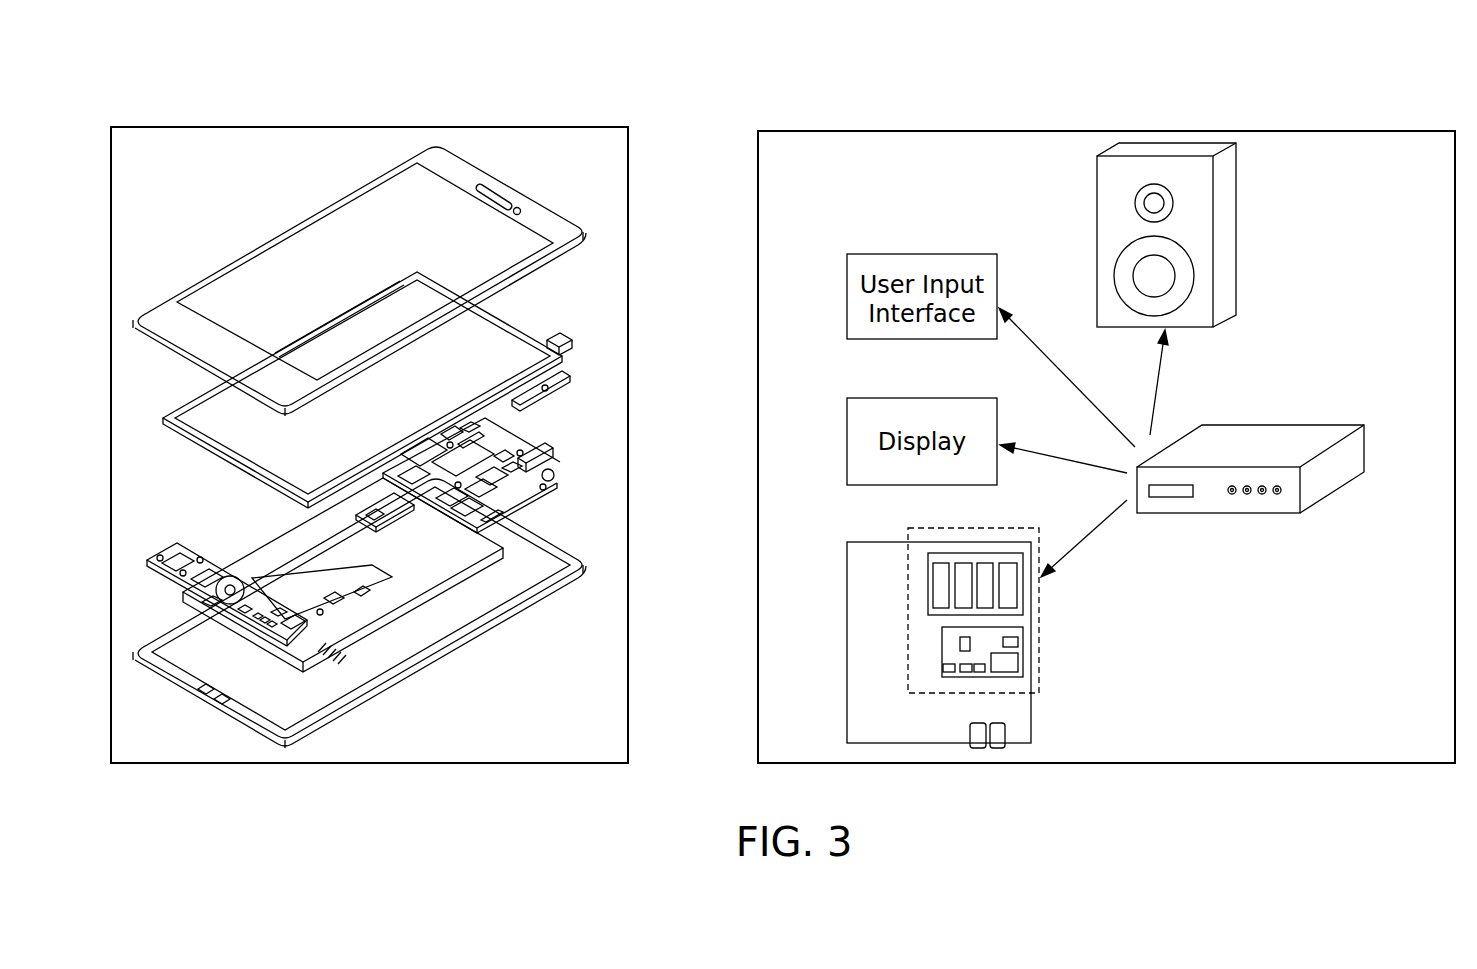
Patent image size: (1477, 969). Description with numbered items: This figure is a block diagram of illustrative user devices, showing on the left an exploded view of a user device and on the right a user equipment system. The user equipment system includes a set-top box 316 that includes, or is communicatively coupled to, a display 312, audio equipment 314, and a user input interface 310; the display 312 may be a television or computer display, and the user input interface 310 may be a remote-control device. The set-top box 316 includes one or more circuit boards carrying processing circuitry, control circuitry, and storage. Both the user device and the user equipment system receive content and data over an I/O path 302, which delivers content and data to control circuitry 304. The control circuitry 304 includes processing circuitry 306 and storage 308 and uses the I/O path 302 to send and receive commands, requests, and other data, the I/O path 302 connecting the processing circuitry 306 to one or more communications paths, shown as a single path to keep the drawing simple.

The I/O path 302 is at (229, 603).
The control circuitry 304 is at (893, 655).
The processing circuitry 306 is at (931, 629).
The storage 308 is at (916, 573).
The user input interface 310 is at (833, 293).
The display 312 is at (834, 399).
The audio equipment 314 is at (1081, 236).
The set-top box 316 is at (1242, 425).